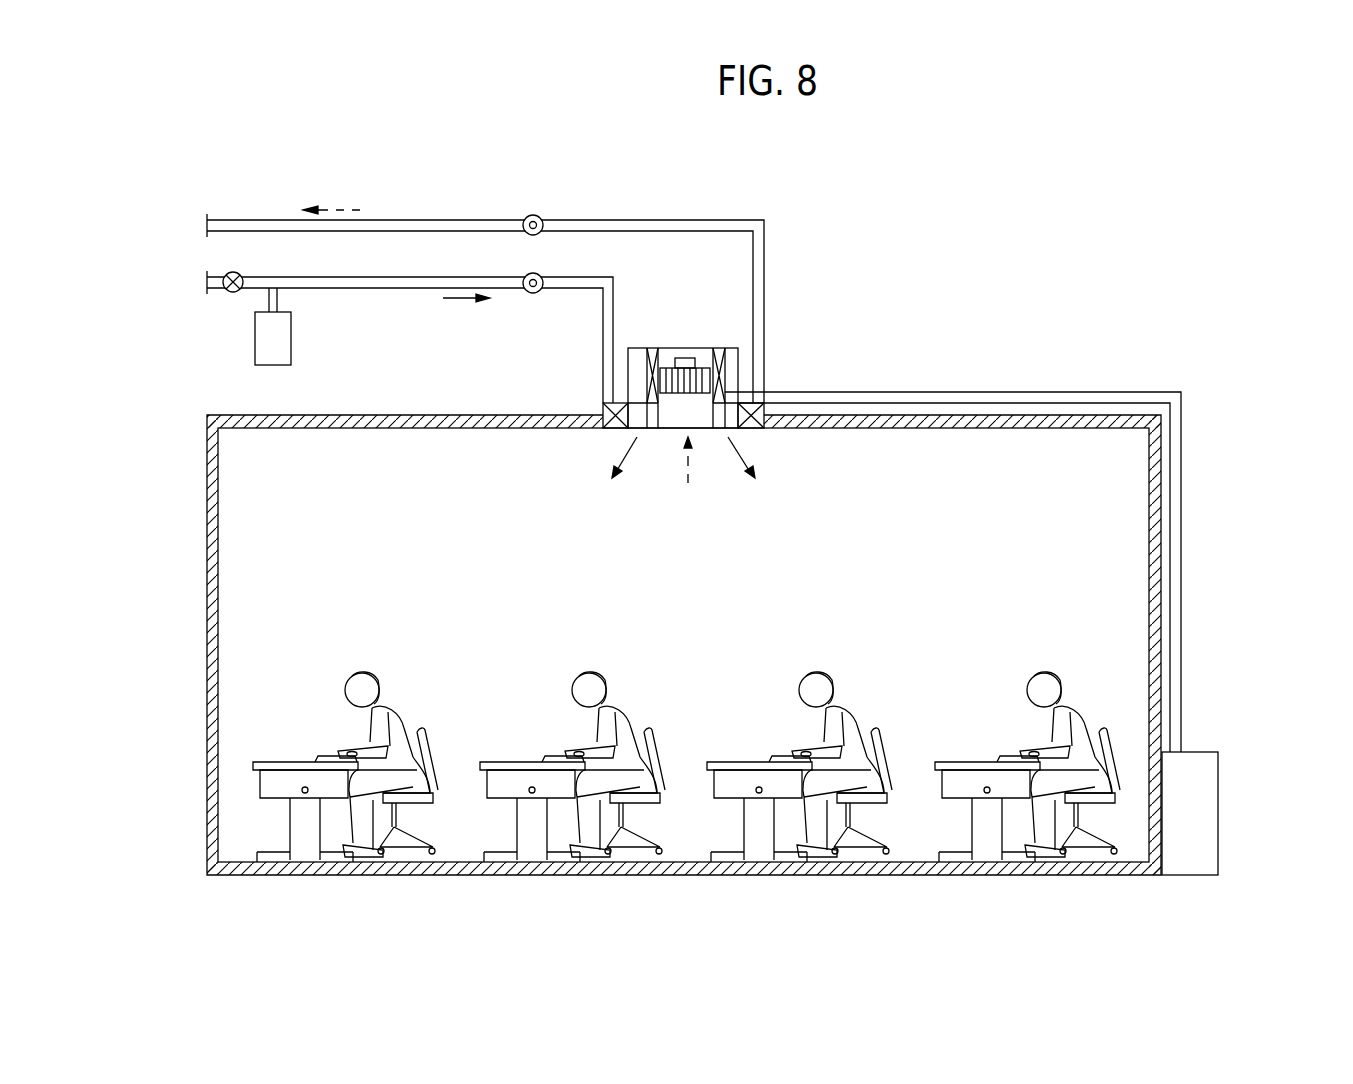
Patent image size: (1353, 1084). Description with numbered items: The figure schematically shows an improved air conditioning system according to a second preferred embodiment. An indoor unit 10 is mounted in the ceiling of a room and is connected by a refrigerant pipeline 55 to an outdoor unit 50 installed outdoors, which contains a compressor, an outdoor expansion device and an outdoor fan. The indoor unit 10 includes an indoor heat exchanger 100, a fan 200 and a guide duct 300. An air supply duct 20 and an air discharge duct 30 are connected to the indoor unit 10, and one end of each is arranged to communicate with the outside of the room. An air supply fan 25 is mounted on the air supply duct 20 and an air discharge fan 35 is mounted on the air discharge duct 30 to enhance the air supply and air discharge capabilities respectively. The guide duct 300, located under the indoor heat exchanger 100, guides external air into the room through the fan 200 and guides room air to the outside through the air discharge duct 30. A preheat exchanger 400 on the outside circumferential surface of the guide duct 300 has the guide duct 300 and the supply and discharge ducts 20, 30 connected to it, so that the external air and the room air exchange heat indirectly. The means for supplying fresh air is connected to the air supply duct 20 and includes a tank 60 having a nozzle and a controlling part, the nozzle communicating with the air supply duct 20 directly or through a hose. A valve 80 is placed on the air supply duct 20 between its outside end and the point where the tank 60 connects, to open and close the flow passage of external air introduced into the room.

The indoor unit 10 is at (738, 349).
The air supply duct 20 is at (613, 308).
The air supply fan 25 is at (533, 293).
The air discharge duct 30 is at (688, 222).
The air discharge fan 35 is at (533, 215).
The outdoor unit 50 is at (1218, 820).
The refrigerant pipeline 55 is at (1183, 640).
The tank 60 is at (291, 335).
The valve 80 is at (233, 293).
The indoor heat exchanger 100 is at (713, 375).
The fan 200 is at (738, 350).
The guide duct 300 is at (672, 432).
The preheat exchanger 400 is at (601, 404).